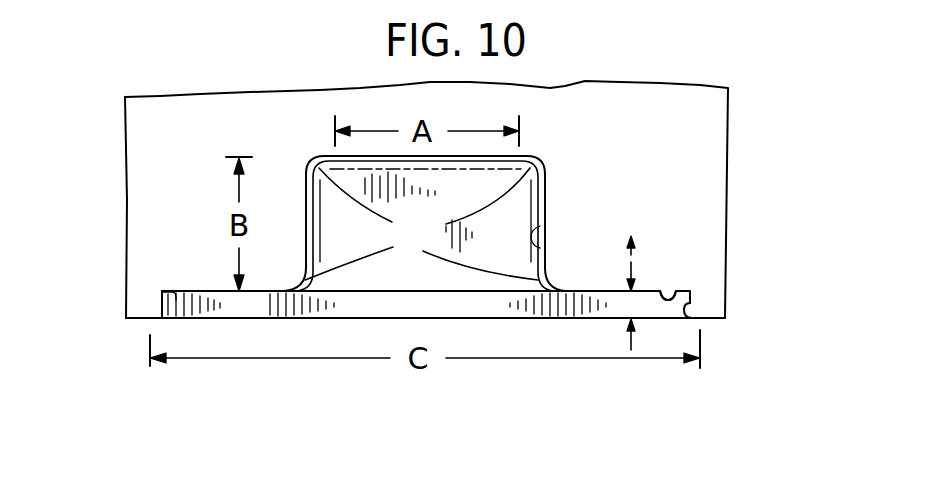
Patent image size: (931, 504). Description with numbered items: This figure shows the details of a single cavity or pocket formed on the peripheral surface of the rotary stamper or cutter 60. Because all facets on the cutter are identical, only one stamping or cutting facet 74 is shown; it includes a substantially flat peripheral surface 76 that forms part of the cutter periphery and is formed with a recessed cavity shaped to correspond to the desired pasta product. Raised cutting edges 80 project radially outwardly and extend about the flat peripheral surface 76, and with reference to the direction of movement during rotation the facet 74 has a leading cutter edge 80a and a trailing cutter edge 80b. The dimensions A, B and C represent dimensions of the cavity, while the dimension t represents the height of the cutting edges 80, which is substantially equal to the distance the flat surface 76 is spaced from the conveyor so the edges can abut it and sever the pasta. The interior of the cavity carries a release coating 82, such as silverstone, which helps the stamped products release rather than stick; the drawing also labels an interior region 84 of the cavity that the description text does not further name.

The rotary stamper or cutter 60 is at (140, 174).
The stamping or cutting facet 74 is at (326, 366).
The flat peripheral surface 76 is at (665, 294).
The cutting edges 80 is at (140, 318).
The leading cutter edge 80a is at (185, 290).
The trailing cutter edge 80b is at (690, 312).
The coating 82 is at (540, 228).
The dome interior surface 84 is at (446, 224).